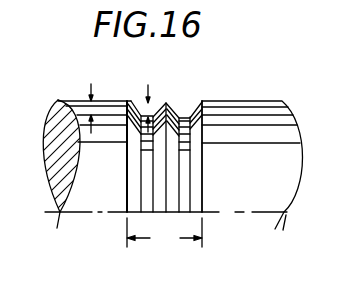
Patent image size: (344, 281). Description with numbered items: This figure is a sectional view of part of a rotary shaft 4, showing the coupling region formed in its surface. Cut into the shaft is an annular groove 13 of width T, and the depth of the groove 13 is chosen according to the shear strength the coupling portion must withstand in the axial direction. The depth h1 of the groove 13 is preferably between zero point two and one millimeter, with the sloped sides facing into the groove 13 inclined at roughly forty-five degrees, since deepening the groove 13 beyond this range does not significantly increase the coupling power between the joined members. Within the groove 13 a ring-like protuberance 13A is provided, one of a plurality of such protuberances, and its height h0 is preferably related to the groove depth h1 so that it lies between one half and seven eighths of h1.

The screw shank 4 is at (254, 120).
The annular groove 13 is at (132, 101).
The ring-like protuberance 13A is at (174, 104).
The depth of the groove h1 is at (88, 100).
The height of the protuberance h0 is at (143, 112).
The width of the groove T is at (164, 233).